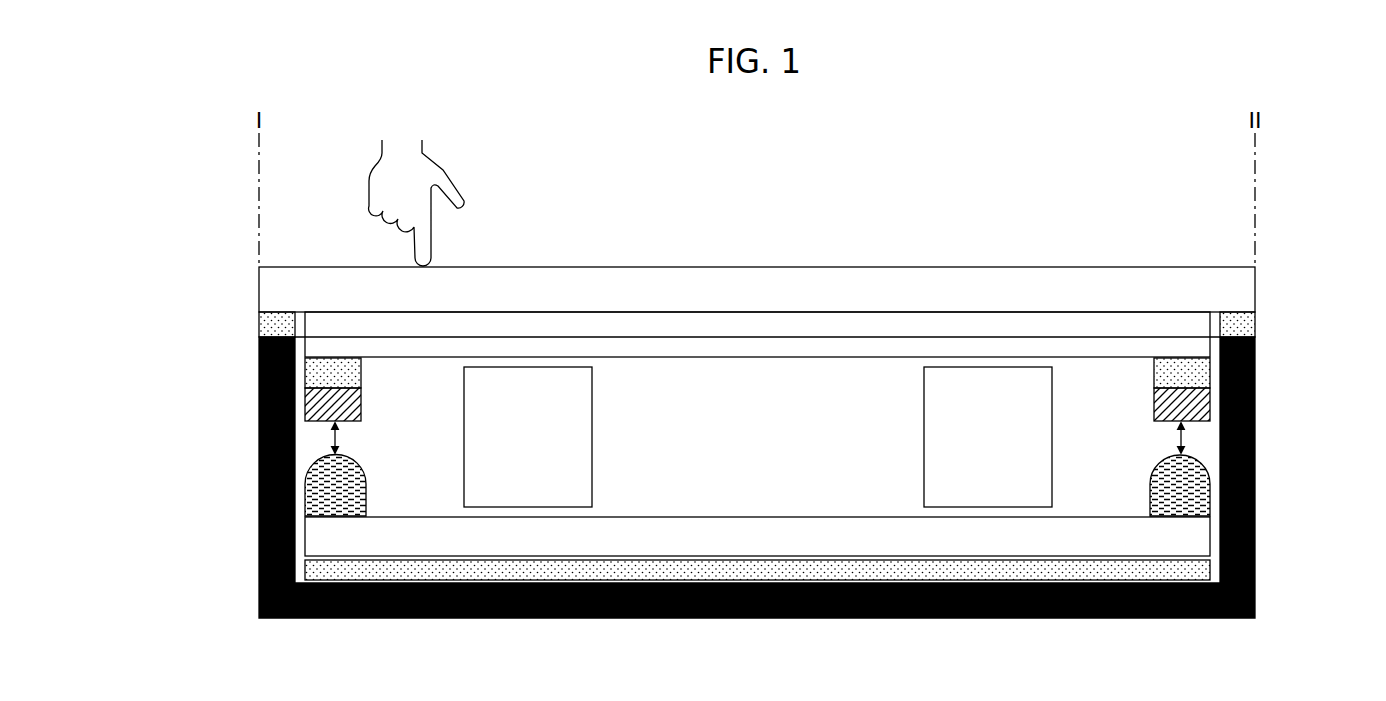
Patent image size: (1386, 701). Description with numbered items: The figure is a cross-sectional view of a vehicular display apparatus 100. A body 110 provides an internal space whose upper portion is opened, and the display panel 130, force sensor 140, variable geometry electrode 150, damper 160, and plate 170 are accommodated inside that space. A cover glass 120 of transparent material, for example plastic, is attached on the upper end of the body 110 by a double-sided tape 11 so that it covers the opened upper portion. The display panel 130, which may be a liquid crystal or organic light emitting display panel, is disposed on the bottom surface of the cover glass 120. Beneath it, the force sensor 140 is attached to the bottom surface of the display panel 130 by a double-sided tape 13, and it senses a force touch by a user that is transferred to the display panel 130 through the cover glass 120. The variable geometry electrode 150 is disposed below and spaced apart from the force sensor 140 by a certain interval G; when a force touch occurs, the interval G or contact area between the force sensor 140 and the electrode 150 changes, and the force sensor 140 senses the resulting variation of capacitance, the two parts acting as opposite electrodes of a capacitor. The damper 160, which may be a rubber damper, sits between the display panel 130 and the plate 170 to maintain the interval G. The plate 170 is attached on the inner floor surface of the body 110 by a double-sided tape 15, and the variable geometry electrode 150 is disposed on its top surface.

The vehicular display apparatus 100 is at (918, 152).
The body 110 is at (1256, 413).
The double-sided tape 11 is at (258, 323).
The cover glass 120 is at (642, 267).
The display panel 130 is at (758, 358).
The double-sided tape 13 is at (362, 375).
The force sensor 140 is at (362, 405).
The interval G is at (337, 440).
The variable geometry electrode 150 is at (369, 493).
The damper 160 is at (592, 416).
The plate 170 is at (855, 516).
The double-sided tape 15 is at (625, 518).